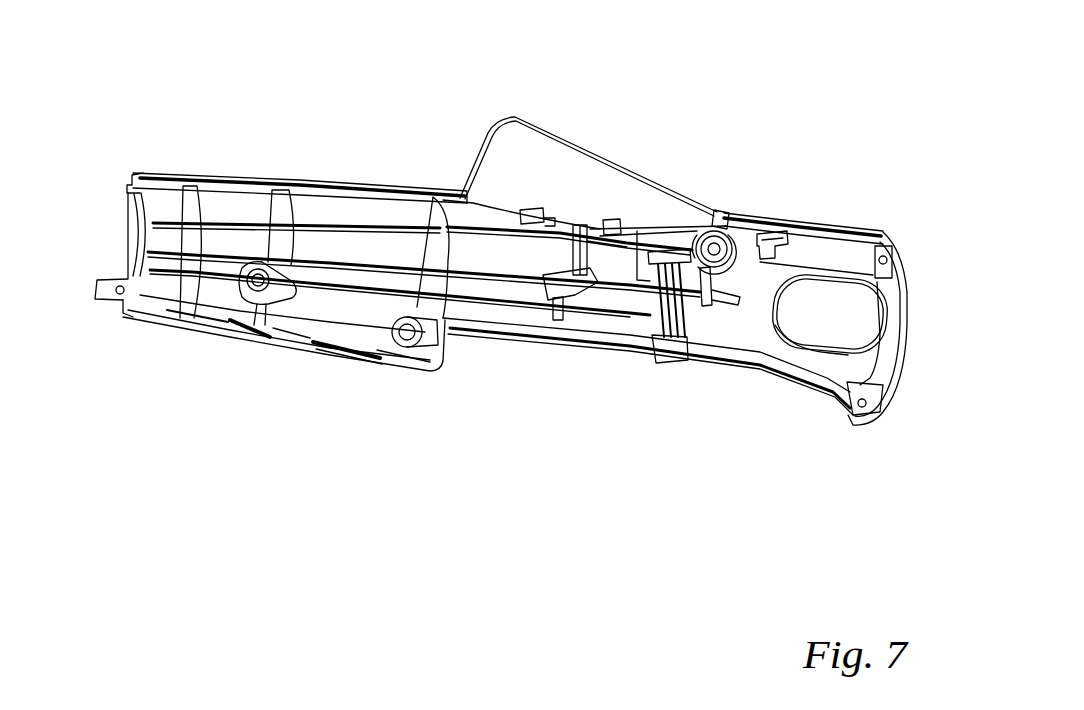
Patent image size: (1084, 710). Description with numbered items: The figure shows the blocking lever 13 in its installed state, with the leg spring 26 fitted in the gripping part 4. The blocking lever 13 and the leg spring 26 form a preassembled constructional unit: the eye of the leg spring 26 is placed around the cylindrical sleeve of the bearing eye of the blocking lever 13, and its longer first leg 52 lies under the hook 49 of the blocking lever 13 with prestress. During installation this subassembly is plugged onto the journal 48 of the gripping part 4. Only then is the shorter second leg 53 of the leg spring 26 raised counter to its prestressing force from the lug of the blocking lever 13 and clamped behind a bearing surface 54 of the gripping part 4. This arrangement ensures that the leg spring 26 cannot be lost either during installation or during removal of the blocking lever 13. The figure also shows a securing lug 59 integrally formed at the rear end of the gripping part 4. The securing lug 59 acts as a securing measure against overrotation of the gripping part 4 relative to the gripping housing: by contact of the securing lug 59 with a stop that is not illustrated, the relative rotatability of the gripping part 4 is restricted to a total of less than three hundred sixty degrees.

The gripping part 4 is at (367, 180).
The blocking lever 13 is at (540, 122).
The leg spring 26 is at (728, 237).
The journal 48 is at (760, 243).
The hook 49 is at (605, 235).
The first leg 52 is at (640, 227).
The second leg 53 is at (710, 331).
The bearing surface 54 is at (770, 312).
The securing lug 59 is at (105, 300).